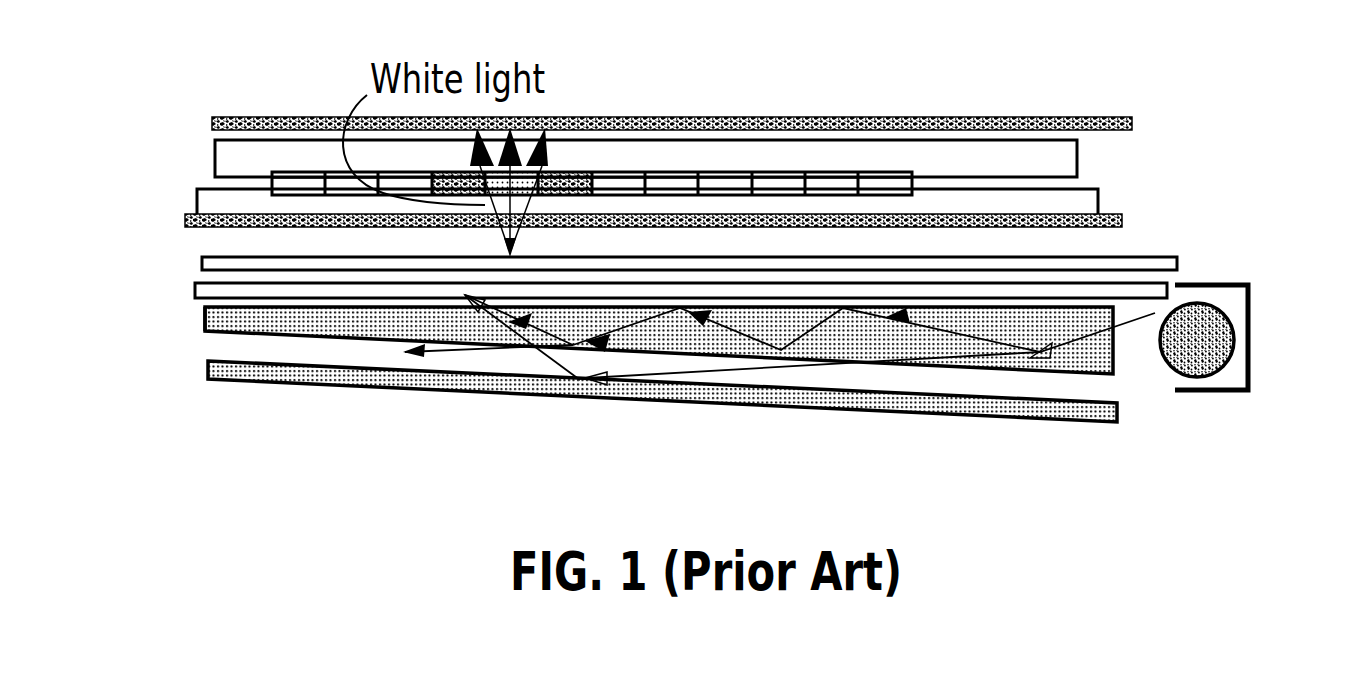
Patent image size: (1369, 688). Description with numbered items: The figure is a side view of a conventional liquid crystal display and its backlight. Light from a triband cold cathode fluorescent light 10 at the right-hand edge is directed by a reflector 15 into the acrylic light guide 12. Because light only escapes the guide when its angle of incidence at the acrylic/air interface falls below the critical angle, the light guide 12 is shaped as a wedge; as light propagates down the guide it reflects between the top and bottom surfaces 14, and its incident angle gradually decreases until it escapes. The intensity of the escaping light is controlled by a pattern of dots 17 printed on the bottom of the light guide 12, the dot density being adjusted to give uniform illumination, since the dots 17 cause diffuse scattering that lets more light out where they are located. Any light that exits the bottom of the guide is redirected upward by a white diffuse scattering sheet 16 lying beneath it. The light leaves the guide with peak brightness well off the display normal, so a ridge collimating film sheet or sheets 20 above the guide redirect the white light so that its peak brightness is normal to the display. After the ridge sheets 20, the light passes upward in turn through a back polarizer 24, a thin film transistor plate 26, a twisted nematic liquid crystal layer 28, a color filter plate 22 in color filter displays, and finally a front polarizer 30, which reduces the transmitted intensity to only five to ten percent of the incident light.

The triband cold cathode fluorescent light 10 is at (1180, 373).
The acrylic light guide 12 is at (207, 328).
The top and bottom surfaces 14 is at (1113, 305).
The reflector 15 is at (1250, 364).
The white diffuse scattering sheet 16 is at (812, 410).
The pattern of dots 17 is at (895, 367).
The ridge collimating film sheet 20 is at (275, 257).
The color filter plate 22 is at (723, 170).
The back polarizer 24 is at (1125, 214).
The thin film transistor plate 26 is at (1100, 187).
The liquid crystal layer 28 is at (228, 183).
The front polarizer 30 is at (1050, 117).